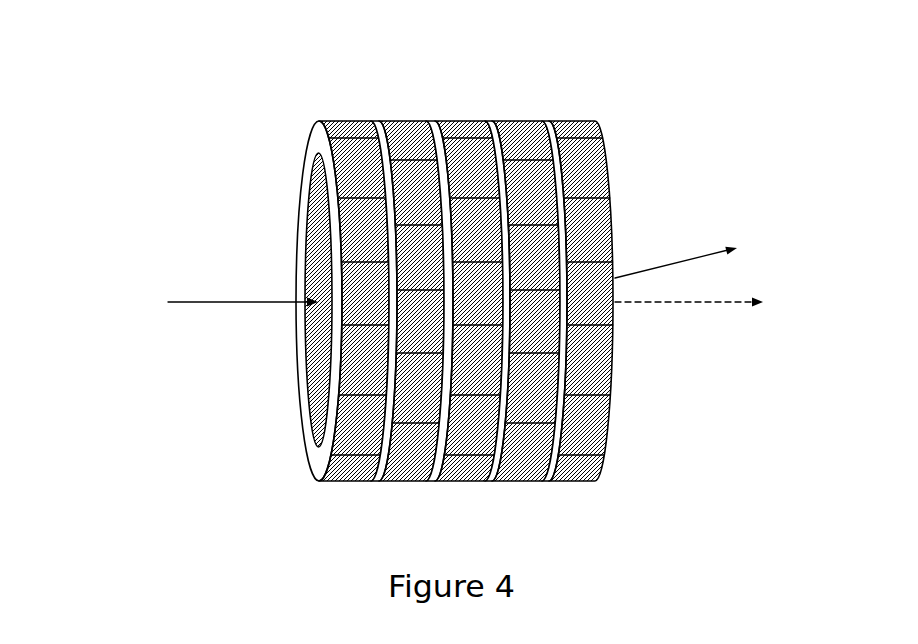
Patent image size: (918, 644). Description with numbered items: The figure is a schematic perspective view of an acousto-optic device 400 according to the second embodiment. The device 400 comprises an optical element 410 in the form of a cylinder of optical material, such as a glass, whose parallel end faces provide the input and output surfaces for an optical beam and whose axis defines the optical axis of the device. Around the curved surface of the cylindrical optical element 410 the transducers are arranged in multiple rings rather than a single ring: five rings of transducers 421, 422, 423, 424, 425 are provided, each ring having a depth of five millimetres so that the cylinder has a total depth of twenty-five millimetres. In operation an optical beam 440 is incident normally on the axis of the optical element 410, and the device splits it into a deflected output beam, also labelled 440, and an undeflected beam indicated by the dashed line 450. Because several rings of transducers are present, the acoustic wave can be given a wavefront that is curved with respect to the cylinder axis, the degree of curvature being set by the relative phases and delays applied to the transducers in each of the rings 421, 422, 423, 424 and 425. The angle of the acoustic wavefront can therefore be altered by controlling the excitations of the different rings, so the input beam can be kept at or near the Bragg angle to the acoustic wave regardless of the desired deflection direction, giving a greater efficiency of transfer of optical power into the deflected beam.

The device 400 is at (170, 189).
The optical element 410 is at (318, 255).
The ring of transducers 421 is at (335, 476).
The ring of transducers 422 is at (400, 470).
The ring of transducers 423 is at (450, 478).
The ring of transducers 424 is at (513, 473).
The ring of transducers 425 is at (585, 482).
The optical beam 440 is at (227, 307).
The undeflected beam 450 is at (663, 303).